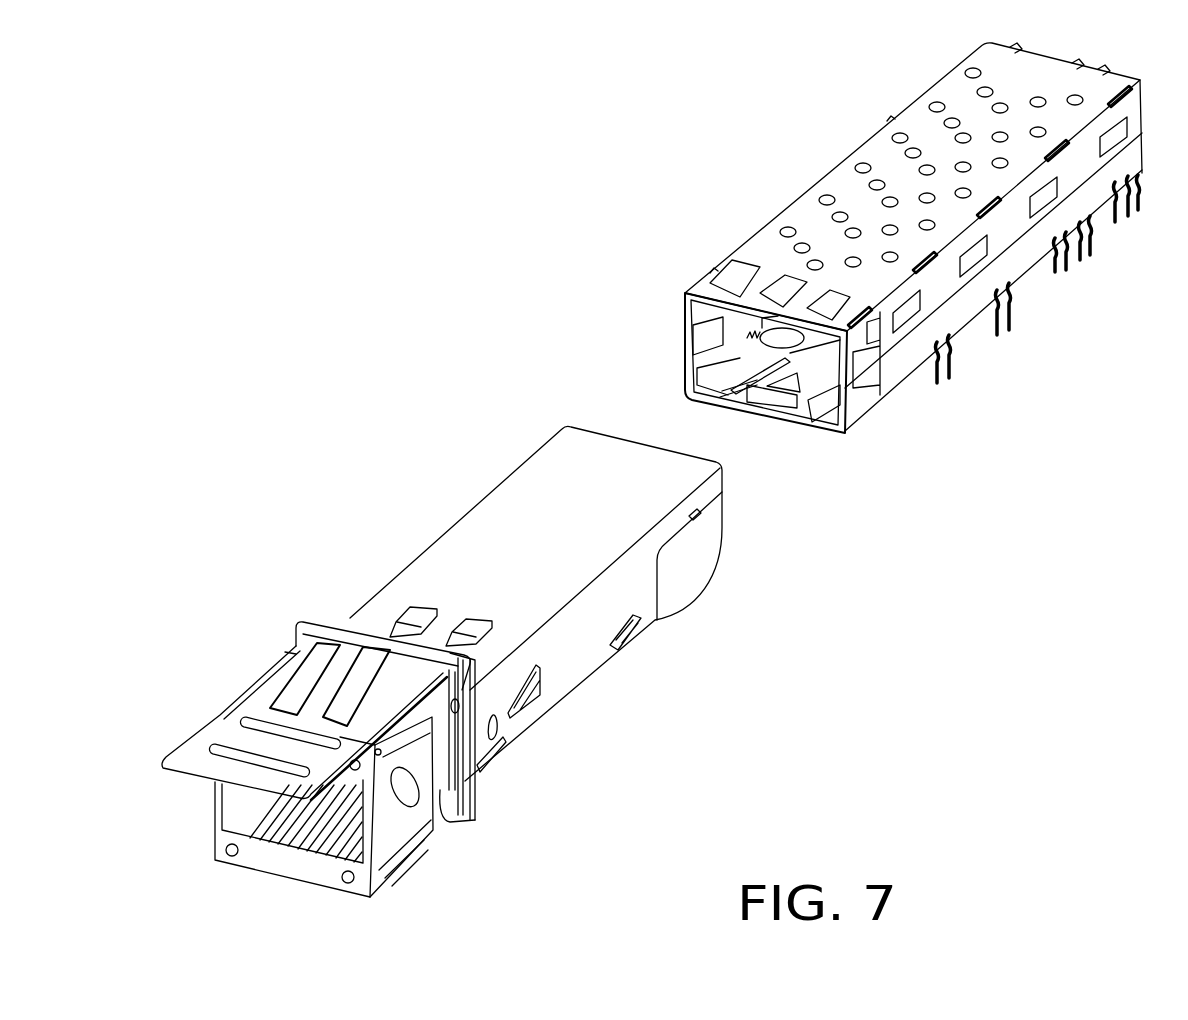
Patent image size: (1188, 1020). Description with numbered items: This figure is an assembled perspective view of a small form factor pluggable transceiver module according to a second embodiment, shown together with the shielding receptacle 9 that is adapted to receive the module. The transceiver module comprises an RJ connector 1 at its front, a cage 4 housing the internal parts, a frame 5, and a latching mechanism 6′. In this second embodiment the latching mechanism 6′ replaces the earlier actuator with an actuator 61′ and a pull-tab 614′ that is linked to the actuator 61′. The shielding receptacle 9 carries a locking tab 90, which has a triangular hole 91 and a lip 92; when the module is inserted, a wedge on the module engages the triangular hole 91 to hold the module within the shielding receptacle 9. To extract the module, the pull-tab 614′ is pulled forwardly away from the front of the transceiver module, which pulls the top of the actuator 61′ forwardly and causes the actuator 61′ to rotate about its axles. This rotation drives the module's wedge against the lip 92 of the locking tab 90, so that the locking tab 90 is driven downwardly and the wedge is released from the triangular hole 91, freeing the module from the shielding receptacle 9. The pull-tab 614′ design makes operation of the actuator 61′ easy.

The RJ connector 1 is at (390, 845).
The cage 4 is at (513, 517).
The frame 5 is at (682, 555).
The latching mechanism 6′ is at (467, 783).
The actuator 61′ is at (320, 625).
The pull-tab 614′ is at (195, 750).
The shielding receptacle 9 is at (833, 183).
The locking tab 90 is at (813, 377).
The triangular hole 91 is at (770, 410).
The lip 92 is at (787, 410).